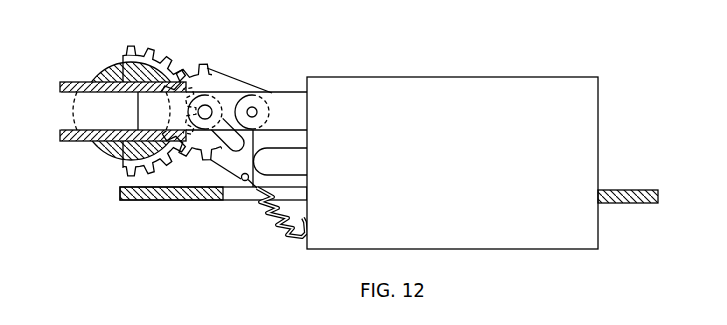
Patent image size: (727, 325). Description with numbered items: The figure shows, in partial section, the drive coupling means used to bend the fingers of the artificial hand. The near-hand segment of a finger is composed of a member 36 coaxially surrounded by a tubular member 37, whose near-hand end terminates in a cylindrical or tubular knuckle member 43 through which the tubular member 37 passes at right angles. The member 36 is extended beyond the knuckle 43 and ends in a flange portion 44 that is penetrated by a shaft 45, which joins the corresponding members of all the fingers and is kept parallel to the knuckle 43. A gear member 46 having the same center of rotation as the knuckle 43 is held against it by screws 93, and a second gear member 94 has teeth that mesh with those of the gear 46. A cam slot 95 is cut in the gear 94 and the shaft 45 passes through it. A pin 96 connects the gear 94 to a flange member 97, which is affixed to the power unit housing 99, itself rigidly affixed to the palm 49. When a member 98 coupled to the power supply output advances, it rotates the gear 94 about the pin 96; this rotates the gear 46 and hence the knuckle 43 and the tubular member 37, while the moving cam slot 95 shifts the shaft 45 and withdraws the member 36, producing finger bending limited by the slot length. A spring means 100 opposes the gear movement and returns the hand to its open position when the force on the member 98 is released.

The near-hand segment member 36 is at (60, 128).
The tubular member 37 is at (78, 82).
The knuckle member 43 is at (110, 152).
The flange portion 44 is at (208, 109).
The shaft 45 is at (254, 110).
The gear member 46 is at (163, 70).
The palm 49 is at (170, 200).
The screws 93 is at (147, 52).
The gear member 94 is at (210, 78).
The cam slot 95 is at (231, 137).
The pin 96 is at (268, 97).
The flange member 97 is at (292, 108).
The member 98 is at (282, 162).
The power unit housing 99 is at (432, 93).
The spring means 100 is at (297, 232).